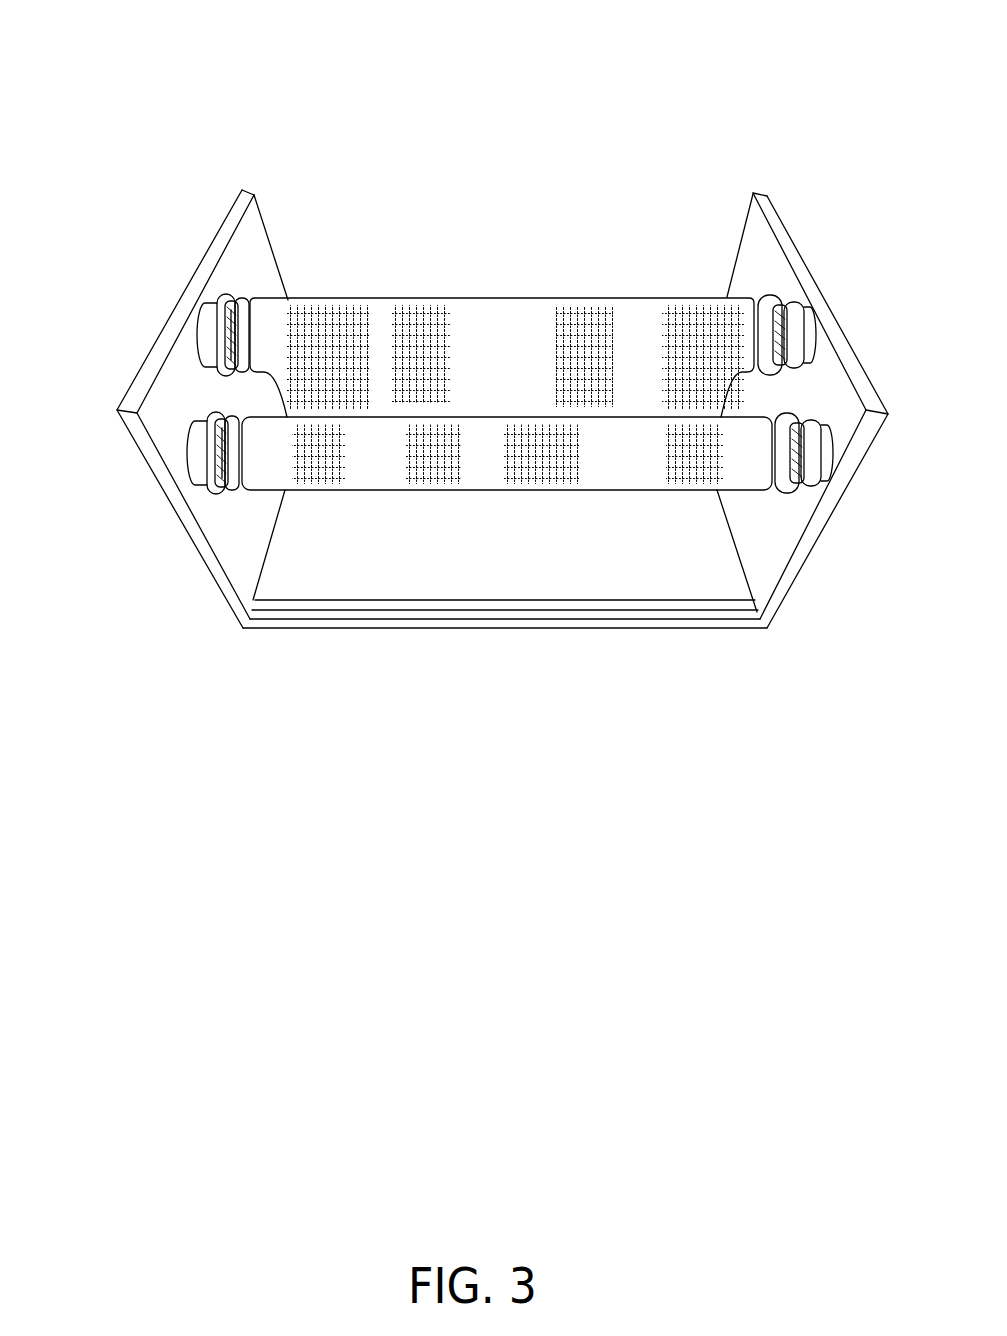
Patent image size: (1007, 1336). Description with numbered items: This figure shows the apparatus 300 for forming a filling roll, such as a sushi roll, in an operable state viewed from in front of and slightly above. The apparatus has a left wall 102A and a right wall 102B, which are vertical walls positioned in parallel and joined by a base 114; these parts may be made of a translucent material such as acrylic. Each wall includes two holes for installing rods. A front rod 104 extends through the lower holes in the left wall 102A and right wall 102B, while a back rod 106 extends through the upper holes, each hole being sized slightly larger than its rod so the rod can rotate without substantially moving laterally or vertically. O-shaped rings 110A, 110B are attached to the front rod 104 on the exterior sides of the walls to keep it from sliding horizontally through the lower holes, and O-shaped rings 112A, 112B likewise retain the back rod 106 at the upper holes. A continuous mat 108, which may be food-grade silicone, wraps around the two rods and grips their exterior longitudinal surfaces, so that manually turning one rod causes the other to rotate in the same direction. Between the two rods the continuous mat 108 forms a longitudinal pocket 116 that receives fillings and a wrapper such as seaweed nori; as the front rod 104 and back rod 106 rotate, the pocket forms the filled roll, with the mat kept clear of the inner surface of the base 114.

The apparatus 300 is at (793, 65).
The left wall 102A is at (192, 277).
The right wall 102B is at (773, 198).
The base 114 is at (520, 630).
The longitudinal pocket 116 is at (494, 393).
The continuous mat 108 is at (640, 507).
The back rod 106 is at (238, 323).
The front rod 104 is at (228, 460).
The O-shaped ring 112A is at (217, 332).
The O-shaped ring 112B is at (775, 295).
The O-shaped ring 110A is at (205, 433).
The O-shaped ring 110B is at (803, 430).